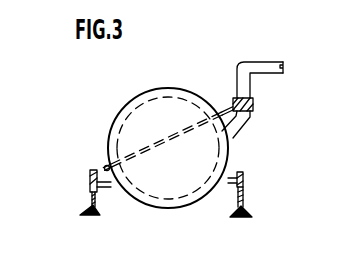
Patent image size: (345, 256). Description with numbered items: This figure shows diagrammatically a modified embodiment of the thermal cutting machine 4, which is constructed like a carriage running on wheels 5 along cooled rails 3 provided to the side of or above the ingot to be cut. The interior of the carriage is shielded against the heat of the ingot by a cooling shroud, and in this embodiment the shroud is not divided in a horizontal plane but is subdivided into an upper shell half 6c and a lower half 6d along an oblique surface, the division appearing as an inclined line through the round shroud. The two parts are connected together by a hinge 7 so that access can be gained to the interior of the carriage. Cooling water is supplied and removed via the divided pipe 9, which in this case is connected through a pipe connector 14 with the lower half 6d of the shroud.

The cooled rails 3 is at (247, 203).
The thermal cutting machine 4 is at (131, 98).
The wheels 5 is at (244, 179).
The shell half 6c is at (180, 96).
The lower half 6d is at (226, 158).
The hinge 7 is at (105, 165).
The divided pipe 9 is at (262, 62).
The pipe connector 14 is at (253, 106).